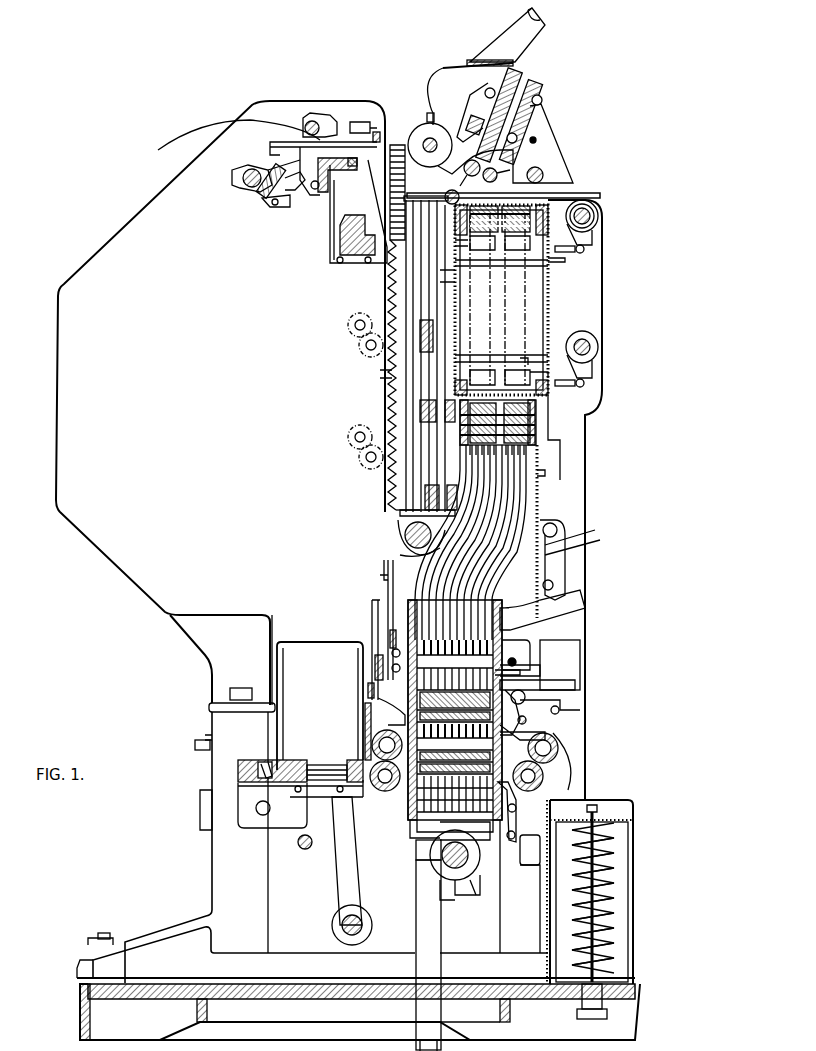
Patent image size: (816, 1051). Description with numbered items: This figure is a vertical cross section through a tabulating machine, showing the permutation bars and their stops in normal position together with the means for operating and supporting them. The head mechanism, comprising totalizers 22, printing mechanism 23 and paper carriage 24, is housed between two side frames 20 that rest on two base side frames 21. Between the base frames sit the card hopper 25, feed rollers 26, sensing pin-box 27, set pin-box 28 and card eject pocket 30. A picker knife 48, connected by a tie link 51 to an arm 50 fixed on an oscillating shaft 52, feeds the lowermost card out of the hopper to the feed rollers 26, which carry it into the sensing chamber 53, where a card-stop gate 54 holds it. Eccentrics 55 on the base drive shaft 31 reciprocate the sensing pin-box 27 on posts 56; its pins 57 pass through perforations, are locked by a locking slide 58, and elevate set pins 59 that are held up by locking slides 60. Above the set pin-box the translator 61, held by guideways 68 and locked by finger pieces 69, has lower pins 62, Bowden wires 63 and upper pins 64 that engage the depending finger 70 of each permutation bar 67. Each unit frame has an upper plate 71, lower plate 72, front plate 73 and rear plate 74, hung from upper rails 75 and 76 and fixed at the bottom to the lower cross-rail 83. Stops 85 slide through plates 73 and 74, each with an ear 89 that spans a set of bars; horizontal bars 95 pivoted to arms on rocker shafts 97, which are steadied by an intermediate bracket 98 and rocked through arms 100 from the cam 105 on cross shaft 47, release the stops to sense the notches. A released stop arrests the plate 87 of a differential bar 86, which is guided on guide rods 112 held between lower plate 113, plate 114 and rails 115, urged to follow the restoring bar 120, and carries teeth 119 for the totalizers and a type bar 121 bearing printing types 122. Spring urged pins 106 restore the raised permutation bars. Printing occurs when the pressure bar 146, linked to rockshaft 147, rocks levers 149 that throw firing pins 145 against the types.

The side frames 20 is at (140, 580).
The base side frames 21 is at (235, 878).
The totalizers 22 is at (362, 345).
The printing mechanism 23 is at (160, 150).
The paper carriage 24 is at (530, 115).
The card hopper 25 is at (316, 680).
The feed rollers 26 is at (543, 778).
The sensing pin-box 27 is at (410, 808).
The set pin-box 28 is at (500, 688).
The card eject pocket 30 is at (600, 815).
The base drive shaft 31 is at (462, 862).
The cross shaft 47 is at (412, 531).
The picker knife 48 is at (292, 760).
The arm 50 is at (345, 862).
The tie link 51 is at (312, 800).
The shaft 52 is at (342, 928).
The sensing chamber 53 is at (375, 745).
The card-stop gate 54 is at (550, 735).
The eccentrics 55 is at (462, 892).
The posts 56 is at (425, 870).
The pins 57 is at (430, 828).
The locking slide 58 is at (514, 795).
The set pins 59 is at (500, 680).
The locking slides 60 is at (370, 720).
The translator 61 is at (540, 500).
The lower pins 62 is at (515, 655).
The Bowden wires 63 is at (520, 560).
The upper pins 64 is at (525, 425).
The permutation bars 67 is at (539, 375).
The guideways 68 is at (570, 686).
The finger pieces 69 is at (518, 665).
The depending finger 70 is at (530, 405).
The upper plate 71 is at (512, 262).
The lower plate 72 is at (480, 378).
The front plate 73 is at (460, 335).
The rear plate 74 is at (548, 320).
The upper rail 75 is at (448, 200).
The upper rail 76 is at (548, 195).
The lower cross-rail 83 is at (438, 420).
The stops 85 is at (560, 262).
The differential bar 86 is at (392, 370).
The plate 87 is at (470, 362).
The ear 89 is at (524, 365).
The horizontal bars 95 is at (582, 253).
The rocker shafts 97 is at (598, 214).
The intermediate bracket 98 is at (592, 228).
The arms 100 is at (580, 195).
The cam 105 is at (430, 552).
The spring urged pins 106 is at (520, 192).
The guide rods 112 is at (430, 292).
The lower plate 113 is at (405, 514).
The plate 114 is at (414, 215).
The rails 115 is at (450, 487).
The teeth 119 is at (380, 373).
The restoring bar 120 is at (420, 330).
The type bar 121 is at (396, 142).
The printing types 122 is at (390, 200).
The firing pins 145 is at (277, 142).
The pressure bar 146 is at (263, 195).
The rockshaft 147 is at (248, 168).
The levers 149 is at (303, 152).